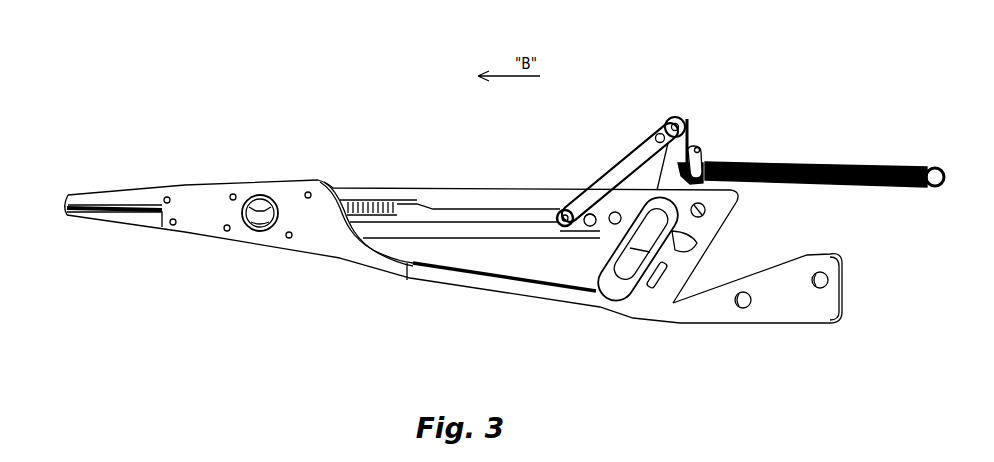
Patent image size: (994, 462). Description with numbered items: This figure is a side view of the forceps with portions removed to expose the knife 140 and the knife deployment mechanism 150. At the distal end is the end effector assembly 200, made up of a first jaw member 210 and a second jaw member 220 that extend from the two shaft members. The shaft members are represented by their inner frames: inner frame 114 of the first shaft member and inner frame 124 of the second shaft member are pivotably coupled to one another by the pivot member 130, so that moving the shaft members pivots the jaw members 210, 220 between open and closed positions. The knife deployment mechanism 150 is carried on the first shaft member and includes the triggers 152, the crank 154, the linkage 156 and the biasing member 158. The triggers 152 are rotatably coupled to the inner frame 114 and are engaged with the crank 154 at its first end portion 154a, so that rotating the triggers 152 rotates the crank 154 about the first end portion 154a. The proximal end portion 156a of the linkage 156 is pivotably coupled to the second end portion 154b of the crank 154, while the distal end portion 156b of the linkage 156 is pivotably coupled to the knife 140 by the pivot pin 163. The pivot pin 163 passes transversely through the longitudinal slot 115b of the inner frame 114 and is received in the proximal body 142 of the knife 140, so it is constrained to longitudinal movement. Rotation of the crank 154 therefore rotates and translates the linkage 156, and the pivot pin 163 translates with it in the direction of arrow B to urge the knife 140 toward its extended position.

The inner frame 114 is at (480, 190).
The longitudinal slot 115b is at (589, 235).
The inner frame 124 is at (503, 287).
The pivot member 130 is at (262, 196).
The knife 140 is at (443, 219).
The proximal body 142 is at (517, 208).
The knife deployment mechanism 150 is at (628, 127).
The triggers 152 is at (667, 291).
The crank 154 is at (706, 157).
The first end portion 154a is at (680, 253).
The second end portion 154b is at (697, 145).
The linkage 156 is at (604, 176).
The proximal end portion 156a is at (669, 118).
The distal end portion 156b is at (565, 210).
The biasing member 158 is at (867, 163).
The pivot pin 163 is at (567, 241).
The end effector assembly 200 is at (63, 171).
The first jaw member 210 is at (98, 218).
The second jaw member 220 is at (107, 202).